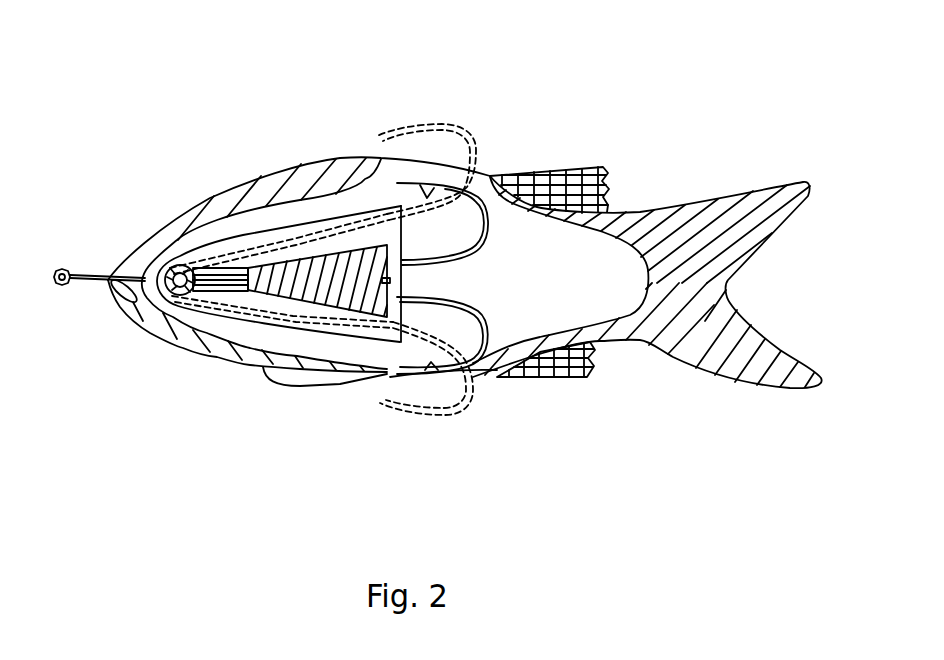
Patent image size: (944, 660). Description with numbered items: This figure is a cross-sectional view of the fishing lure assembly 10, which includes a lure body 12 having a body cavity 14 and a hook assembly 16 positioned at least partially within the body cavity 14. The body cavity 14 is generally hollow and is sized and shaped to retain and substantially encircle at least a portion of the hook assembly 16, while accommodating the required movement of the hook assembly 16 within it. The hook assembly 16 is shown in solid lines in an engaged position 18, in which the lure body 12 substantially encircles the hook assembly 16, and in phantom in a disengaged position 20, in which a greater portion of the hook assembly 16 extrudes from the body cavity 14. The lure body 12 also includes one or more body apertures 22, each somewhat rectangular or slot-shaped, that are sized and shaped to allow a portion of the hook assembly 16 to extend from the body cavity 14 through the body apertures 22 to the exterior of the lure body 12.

The fishing lure assembly 10 is at (158, 103).
The lure body 12 is at (253, 178).
The body cavity 14 is at (549, 262).
The hook assembly 16 is at (240, 321).
The engaged position 18 is at (490, 228).
The disengaged position 20 is at (465, 141).
The body aperture 22 is at (392, 174).